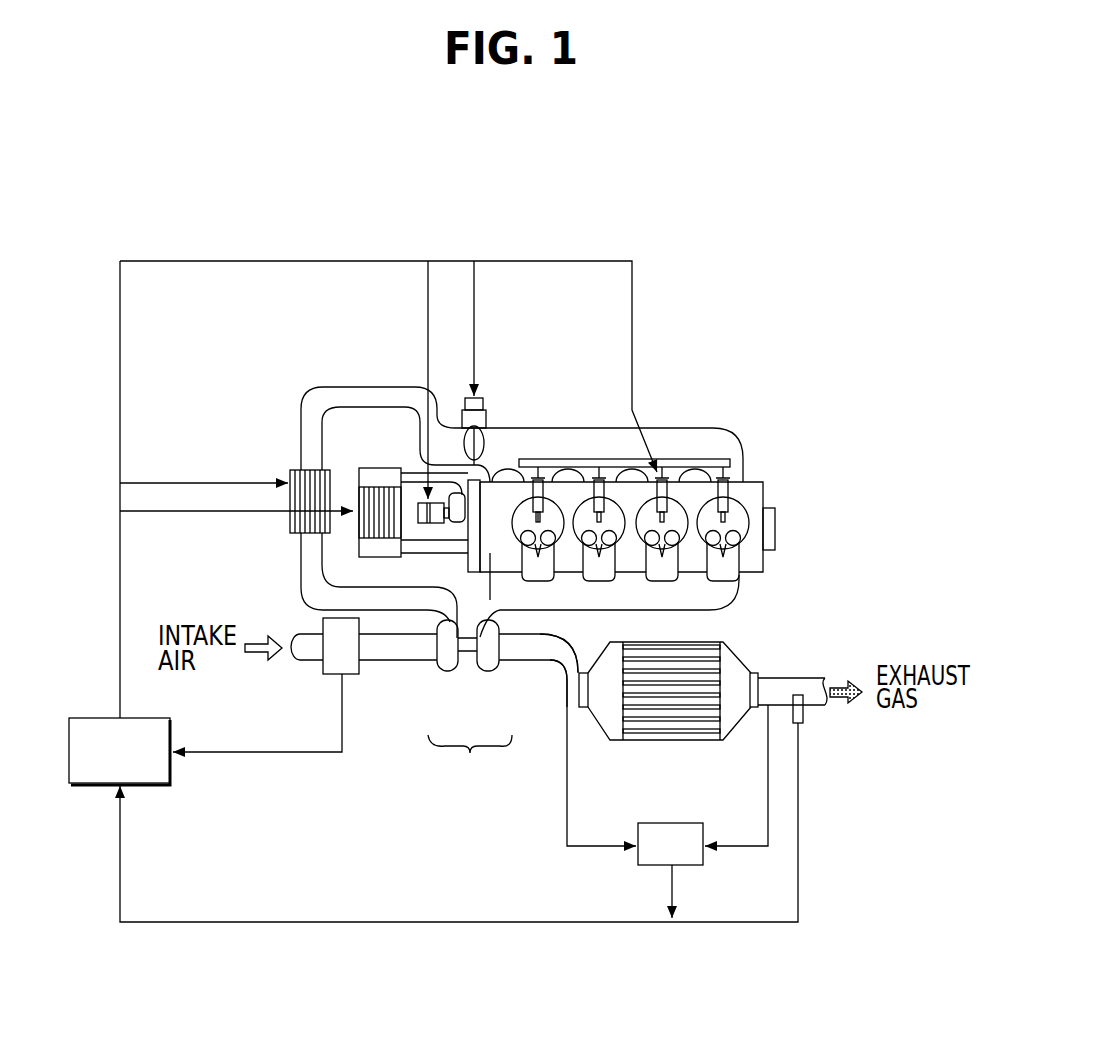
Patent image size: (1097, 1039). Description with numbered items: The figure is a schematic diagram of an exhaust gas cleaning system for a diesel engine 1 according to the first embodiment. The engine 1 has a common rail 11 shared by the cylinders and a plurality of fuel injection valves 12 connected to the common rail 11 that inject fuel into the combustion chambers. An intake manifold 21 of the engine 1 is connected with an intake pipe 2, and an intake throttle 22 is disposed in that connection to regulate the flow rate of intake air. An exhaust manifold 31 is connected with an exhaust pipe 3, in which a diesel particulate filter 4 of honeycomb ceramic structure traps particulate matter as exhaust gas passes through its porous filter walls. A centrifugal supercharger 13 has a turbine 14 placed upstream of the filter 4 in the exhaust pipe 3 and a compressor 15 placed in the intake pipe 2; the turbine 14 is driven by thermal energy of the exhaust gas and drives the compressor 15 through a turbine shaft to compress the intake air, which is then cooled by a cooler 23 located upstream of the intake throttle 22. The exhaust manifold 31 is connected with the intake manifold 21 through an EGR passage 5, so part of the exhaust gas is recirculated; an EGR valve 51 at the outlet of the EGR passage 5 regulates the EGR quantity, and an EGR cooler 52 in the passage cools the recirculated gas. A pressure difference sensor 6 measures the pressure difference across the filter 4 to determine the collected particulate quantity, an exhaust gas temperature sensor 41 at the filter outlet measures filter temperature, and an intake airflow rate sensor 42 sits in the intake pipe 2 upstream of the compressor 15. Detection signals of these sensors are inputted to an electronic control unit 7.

The diesel engine 1 is at (772, 564).
The intake pipe 2 is at (362, 387).
The exhaust pipe 3 is at (556, 694).
The diesel particulate filter 4 is at (648, 724).
The exhaust gas recirculation passage 5 is at (300, 597).
The pressure difference sensor 6 is at (638, 865).
The electronic control unit 7 is at (148, 784).
The common rail 11 is at (706, 459).
The fuel injection valve 12 is at (728, 506).
The centrifugal supercharger 13 is at (470, 756).
The turbine 14 is at (488, 671).
The compressor 15 is at (447, 671).
The intake manifold 21 is at (710, 426).
The intake throttle 22 is at (487, 440).
The cooler 23 is at (290, 522).
The exhaust manifold 31 is at (725, 611).
The exhaust gas temperature sensor 41 is at (803, 720).
The intake airflow rate sensor 42 is at (350, 674).
The EGR valve 51 is at (456, 507).
The EGR cooler 52 is at (365, 470).